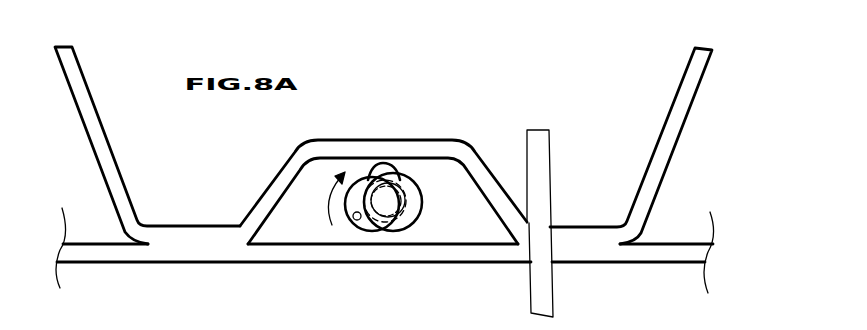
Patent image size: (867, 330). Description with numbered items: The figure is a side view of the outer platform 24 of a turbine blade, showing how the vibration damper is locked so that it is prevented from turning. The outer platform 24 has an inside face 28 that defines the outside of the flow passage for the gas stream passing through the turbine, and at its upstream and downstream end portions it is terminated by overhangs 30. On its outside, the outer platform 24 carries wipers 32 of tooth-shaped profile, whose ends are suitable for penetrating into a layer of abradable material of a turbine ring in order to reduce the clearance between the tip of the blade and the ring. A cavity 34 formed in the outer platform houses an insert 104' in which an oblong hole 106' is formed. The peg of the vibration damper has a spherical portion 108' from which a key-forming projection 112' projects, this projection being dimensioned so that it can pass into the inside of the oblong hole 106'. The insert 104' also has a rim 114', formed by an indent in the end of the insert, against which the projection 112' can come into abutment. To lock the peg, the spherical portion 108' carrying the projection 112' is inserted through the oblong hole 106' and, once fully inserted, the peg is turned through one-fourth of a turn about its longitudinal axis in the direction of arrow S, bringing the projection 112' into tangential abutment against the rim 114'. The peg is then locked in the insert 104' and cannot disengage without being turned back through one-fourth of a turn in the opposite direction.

The outer platform 24 is at (695, 155).
The inside face 28 is at (128, 263).
The overhangs 30 is at (93, 243).
The wipers 32 is at (95, 97).
The cavity 34 is at (428, 160).
The insert 104' is at (380, 266).
The oblong hole 106' is at (336, 256).
The spherical portion 108' is at (396, 245).
The projection 112' is at (383, 153).
The rim 114' is at (358, 161).
The direction of arrow S is at (333, 203).